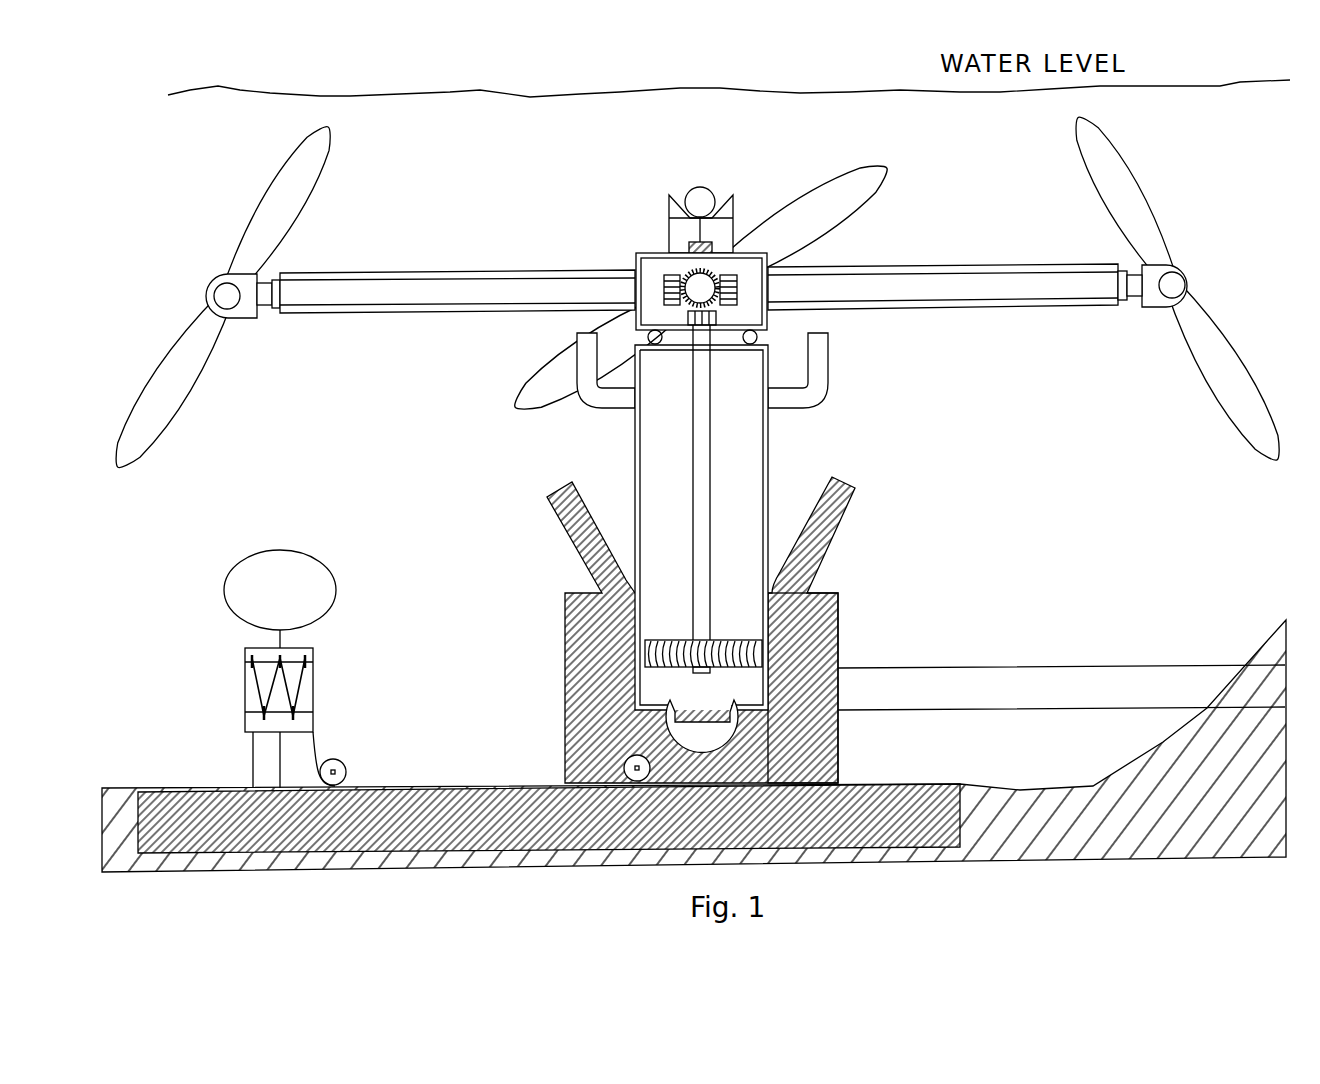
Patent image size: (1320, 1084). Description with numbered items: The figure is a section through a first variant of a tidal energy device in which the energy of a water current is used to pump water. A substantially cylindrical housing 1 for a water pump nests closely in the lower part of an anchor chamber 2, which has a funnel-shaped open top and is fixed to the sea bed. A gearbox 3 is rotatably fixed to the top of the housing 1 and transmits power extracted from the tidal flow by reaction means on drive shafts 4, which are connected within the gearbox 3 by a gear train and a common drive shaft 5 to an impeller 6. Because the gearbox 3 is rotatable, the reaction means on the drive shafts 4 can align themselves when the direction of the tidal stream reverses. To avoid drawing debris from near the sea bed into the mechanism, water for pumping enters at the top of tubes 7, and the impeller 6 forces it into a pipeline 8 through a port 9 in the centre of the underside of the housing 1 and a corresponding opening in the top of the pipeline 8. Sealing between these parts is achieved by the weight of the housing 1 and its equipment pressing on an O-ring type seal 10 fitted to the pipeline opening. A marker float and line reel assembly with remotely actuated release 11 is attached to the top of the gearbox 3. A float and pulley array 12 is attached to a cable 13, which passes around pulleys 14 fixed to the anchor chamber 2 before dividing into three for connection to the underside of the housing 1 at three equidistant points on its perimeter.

The housing 1 is at (648, 447).
The anchor chamber 2 is at (838, 593).
The gearbox 3 is at (768, 328).
The drive shafts 4 is at (288, 201).
The common drive shaft 5 is at (712, 448).
The impeller 6 is at (670, 640).
The tubes 7 is at (577, 353).
The pipeline 8 is at (1150, 680).
The port 9 is at (710, 712).
The O-ring seal 10 is at (840, 615).
The marker float and line reel assembly with remotely actuated release 11 is at (710, 188).
The float and pulley array 12 is at (318, 672).
The cable 13 is at (518, 787).
The pulleys 14 is at (630, 758).